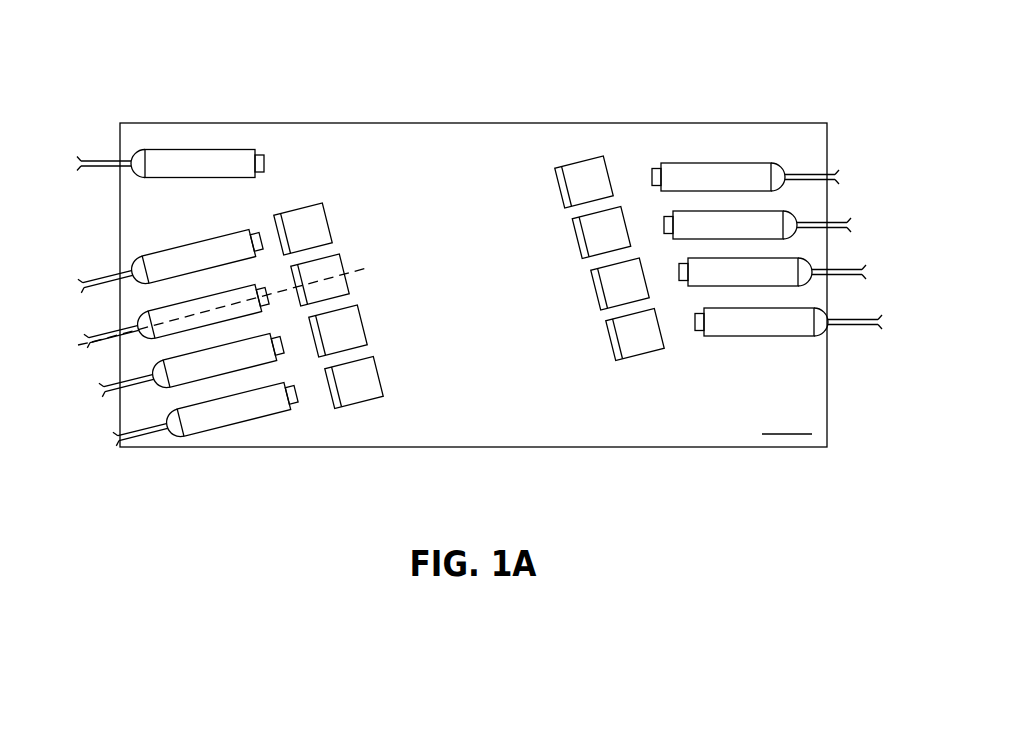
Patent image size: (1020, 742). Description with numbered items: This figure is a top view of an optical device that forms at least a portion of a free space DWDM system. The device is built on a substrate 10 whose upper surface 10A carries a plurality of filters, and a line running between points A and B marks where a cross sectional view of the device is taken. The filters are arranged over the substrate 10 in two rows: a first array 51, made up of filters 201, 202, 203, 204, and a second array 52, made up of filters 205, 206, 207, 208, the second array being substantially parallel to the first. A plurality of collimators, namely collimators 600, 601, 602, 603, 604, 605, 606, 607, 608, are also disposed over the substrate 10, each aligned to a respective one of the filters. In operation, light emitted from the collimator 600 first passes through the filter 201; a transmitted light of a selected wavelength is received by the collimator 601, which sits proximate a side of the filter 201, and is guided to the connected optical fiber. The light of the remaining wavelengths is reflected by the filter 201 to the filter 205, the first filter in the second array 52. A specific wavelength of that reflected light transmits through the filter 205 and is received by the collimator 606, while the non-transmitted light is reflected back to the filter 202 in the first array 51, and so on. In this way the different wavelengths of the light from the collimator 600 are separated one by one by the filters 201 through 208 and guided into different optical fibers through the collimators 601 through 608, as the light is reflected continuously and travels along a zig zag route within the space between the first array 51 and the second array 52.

The substrate 10 is at (473, 123).
The upper surface 10A is at (787, 422).
The first array 51 is at (640, 368).
The second array 52 is at (367, 415).
The filter 201 is at (558, 187).
The filter 202 is at (577, 240).
The filter 203 is at (597, 290).
The filter 204 is at (613, 342).
The filter 205 is at (328, 218).
The filter 206 is at (348, 283).
The filter 207 is at (365, 323).
The filter 208 is at (380, 378).
The collimator 600 is at (199, 150).
The collimator 601 is at (780, 163).
The collimator 602 is at (792, 211).
The collimator 603 is at (807, 258).
The collimator 604 is at (822, 308).
The collimator 605 is at (130, 265).
The collimator 606 is at (142, 320).
The collimator 607 is at (160, 366).
The collimator 608 is at (175, 414).
The line AB endpoint A is at (236, 291).
The line AB endpoint B is at (74, 340).